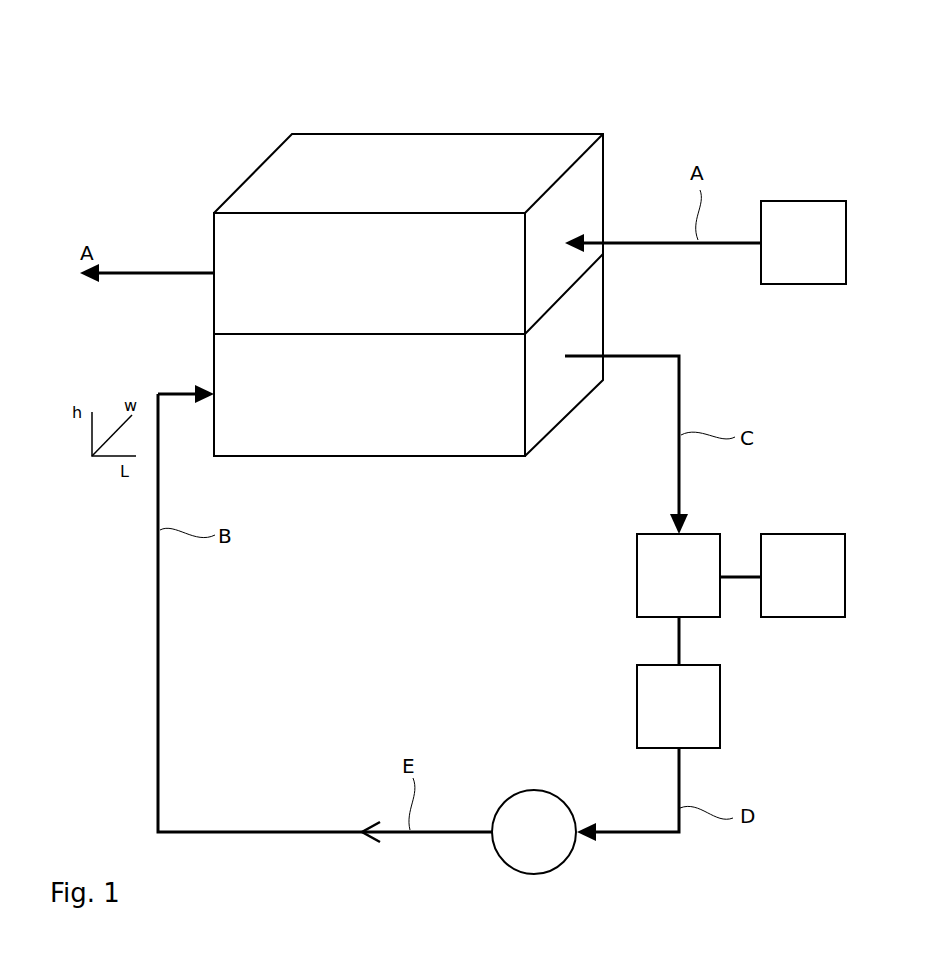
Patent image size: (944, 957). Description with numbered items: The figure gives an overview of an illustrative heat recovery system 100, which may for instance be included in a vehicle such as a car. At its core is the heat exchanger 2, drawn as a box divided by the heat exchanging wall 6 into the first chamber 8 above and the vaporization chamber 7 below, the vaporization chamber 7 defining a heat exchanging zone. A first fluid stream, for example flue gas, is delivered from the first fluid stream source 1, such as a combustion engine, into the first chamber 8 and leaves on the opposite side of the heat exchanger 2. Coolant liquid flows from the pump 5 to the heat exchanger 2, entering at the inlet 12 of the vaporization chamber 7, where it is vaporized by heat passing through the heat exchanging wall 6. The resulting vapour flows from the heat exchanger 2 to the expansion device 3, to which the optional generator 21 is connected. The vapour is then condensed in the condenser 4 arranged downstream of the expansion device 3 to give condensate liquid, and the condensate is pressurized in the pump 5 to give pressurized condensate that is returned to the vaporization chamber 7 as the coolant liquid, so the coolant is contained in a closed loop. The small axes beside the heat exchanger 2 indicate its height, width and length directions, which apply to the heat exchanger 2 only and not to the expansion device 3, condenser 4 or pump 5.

The heat recovery system 100 is at (298, 82).
The heat exchanger 2 is at (525, 133).
The heat exchanging wall 6 is at (597, 263).
The first chamber 8 is at (375, 287).
The vaporization chamber 7 is at (375, 410).
The first fluid stream source 1 is at (810, 255).
The expansion device 3 is at (686, 589).
The generator 21 is at (816, 589).
The condenser 4 is at (686, 719).
The pump 5 is at (541, 844).
The inlet 12 is at (180, 393).